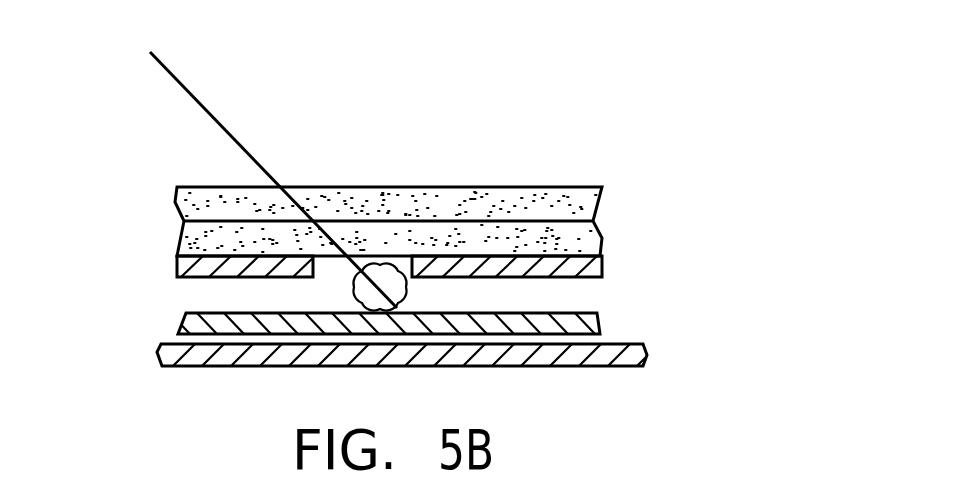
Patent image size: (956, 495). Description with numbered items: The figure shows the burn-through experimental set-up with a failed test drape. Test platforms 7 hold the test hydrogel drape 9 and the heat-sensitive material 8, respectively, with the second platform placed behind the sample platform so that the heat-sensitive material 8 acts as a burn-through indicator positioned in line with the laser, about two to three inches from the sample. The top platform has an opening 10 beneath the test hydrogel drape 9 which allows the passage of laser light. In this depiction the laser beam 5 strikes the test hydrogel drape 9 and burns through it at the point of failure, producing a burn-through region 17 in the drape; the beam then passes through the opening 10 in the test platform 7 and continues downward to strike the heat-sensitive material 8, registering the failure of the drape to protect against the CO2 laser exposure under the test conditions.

The laser beam 5 is at (217, 121).
The test platform 7 is at (600, 279).
The heat-sensitive material 8 is at (185, 322).
The test hydrogel drape 9 is at (620, 190).
The opening 10 is at (338, 261).
The ablation plume 17 is at (410, 285).